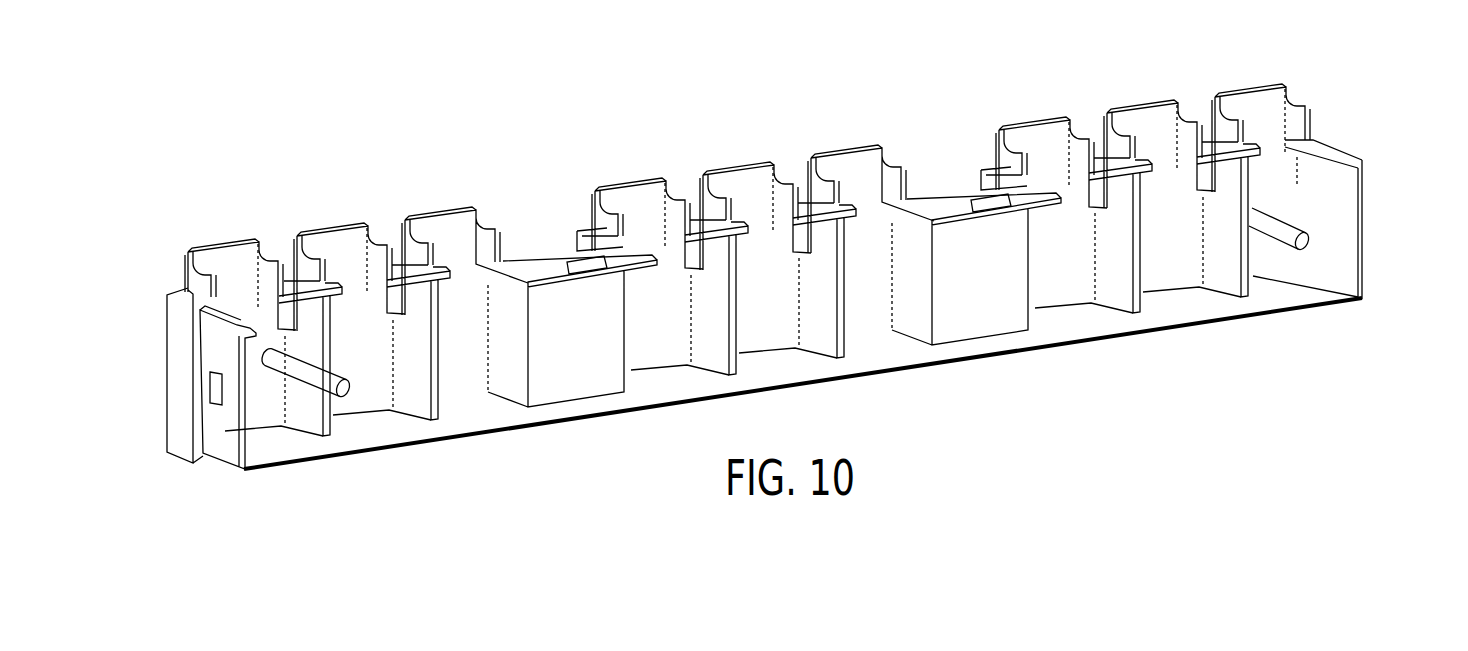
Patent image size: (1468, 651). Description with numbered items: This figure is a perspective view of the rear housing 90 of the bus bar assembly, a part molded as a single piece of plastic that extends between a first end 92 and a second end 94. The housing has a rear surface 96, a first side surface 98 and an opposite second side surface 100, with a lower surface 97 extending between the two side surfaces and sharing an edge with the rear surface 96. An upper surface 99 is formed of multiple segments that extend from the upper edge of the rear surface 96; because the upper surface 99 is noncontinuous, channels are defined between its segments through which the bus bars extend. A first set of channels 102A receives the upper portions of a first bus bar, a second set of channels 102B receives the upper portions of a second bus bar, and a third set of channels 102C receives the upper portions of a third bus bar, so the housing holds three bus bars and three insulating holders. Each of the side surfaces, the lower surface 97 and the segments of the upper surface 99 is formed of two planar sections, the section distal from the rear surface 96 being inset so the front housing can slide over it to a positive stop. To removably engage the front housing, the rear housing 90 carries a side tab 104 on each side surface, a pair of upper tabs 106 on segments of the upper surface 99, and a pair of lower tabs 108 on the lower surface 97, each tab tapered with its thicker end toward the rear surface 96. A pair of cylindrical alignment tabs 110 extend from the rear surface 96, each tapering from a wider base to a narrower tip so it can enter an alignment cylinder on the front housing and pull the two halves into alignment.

The rear housing 90 is at (772, 257).
The first end 92 is at (178, 390).
The second end 94 is at (1367, 220).
The rear surface 96 is at (745, 218).
The lower surface 97 is at (800, 388).
The first side surface 98 is at (177, 342).
The upper surface 99 is at (543, 271).
The second side surface 100 is at (1340, 138).
The first set of channels 102A is at (222, 243).
The second set of channels 102B is at (327, 228).
The third set of channels 102C is at (457, 206).
The side tab 104 is at (215, 400).
The upper tab 106 is at (590, 263).
The lower tab 108 is at (993, 355).
The alignment tab 110 is at (321, 380).